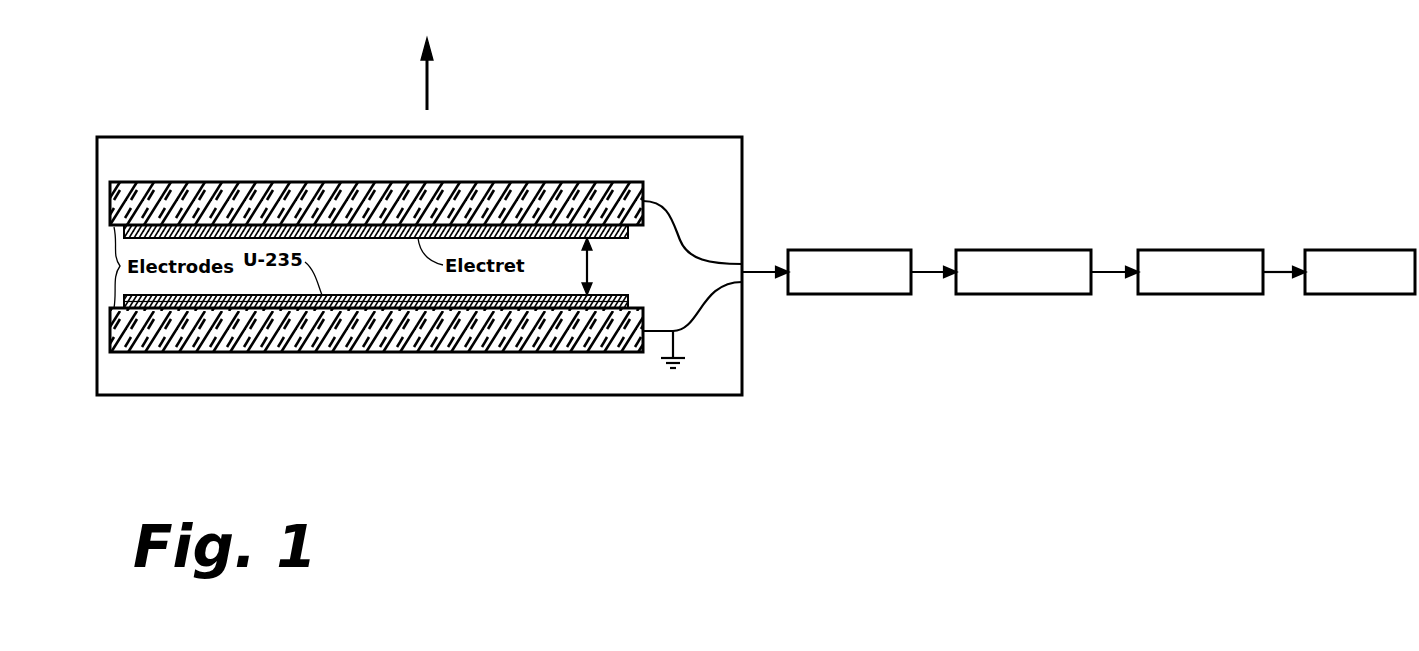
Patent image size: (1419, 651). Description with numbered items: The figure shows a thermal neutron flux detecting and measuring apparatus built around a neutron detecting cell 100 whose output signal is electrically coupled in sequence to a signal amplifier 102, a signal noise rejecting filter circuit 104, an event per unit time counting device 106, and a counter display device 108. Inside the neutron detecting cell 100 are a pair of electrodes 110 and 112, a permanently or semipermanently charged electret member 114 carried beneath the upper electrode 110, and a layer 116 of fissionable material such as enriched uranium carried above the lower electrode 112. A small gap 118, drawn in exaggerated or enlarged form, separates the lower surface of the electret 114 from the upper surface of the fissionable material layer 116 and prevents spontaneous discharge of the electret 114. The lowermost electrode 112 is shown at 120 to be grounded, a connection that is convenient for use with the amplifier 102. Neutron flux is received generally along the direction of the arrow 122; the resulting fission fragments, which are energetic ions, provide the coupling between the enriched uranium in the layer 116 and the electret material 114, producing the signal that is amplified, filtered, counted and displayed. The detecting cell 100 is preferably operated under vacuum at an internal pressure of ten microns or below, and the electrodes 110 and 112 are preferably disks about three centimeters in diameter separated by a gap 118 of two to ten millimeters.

The neutron detecting cell 100 is at (672, 137).
The signal amplifier 102 is at (812, 250).
The signal noise rejecting filter circuit 104 is at (1000, 250).
The event per unit time counting device 106 is at (1172, 250).
The counter display device 108 is at (1330, 250).
The electrode 110 is at (228, 182).
The electrode 112 is at (172, 352).
The electret member 114 is at (352, 238).
The layer of fissionable material 116 is at (405, 295).
The gap 118 is at (590, 265).
The ground connection 120 is at (673, 345).
The arrow 122 is at (430, 76).